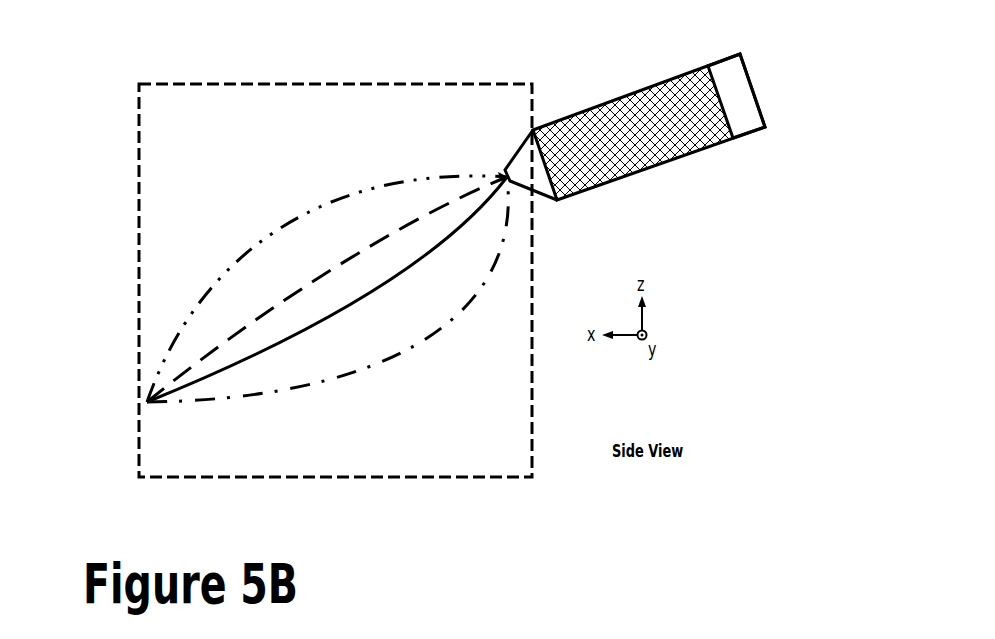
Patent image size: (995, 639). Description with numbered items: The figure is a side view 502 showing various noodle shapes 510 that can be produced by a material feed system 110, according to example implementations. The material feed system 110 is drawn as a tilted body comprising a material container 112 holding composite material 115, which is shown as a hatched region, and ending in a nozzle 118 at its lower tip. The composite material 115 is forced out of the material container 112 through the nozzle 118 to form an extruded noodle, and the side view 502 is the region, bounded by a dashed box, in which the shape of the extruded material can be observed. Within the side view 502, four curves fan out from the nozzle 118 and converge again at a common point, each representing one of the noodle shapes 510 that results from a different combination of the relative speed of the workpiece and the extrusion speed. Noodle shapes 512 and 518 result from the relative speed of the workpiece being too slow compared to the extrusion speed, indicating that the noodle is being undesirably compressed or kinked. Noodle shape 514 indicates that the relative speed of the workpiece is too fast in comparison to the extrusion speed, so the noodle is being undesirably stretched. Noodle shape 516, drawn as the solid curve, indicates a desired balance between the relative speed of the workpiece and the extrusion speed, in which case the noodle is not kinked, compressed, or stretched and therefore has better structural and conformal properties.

The side view 502 is at (138, 185).
The noodle shape 512 is at (363, 193).
The noodle shape 514 is at (398, 233).
The noodle shape 516 is at (398, 287).
The noodle shape 518 is at (458, 325).
The material feed system 110 is at (738, 156).
The composite material 115 is at (662, 108).
The material container 112 is at (750, 73).
The nozzle 118 is at (548, 200).
The noodle shapes 510 is at (838, 92).